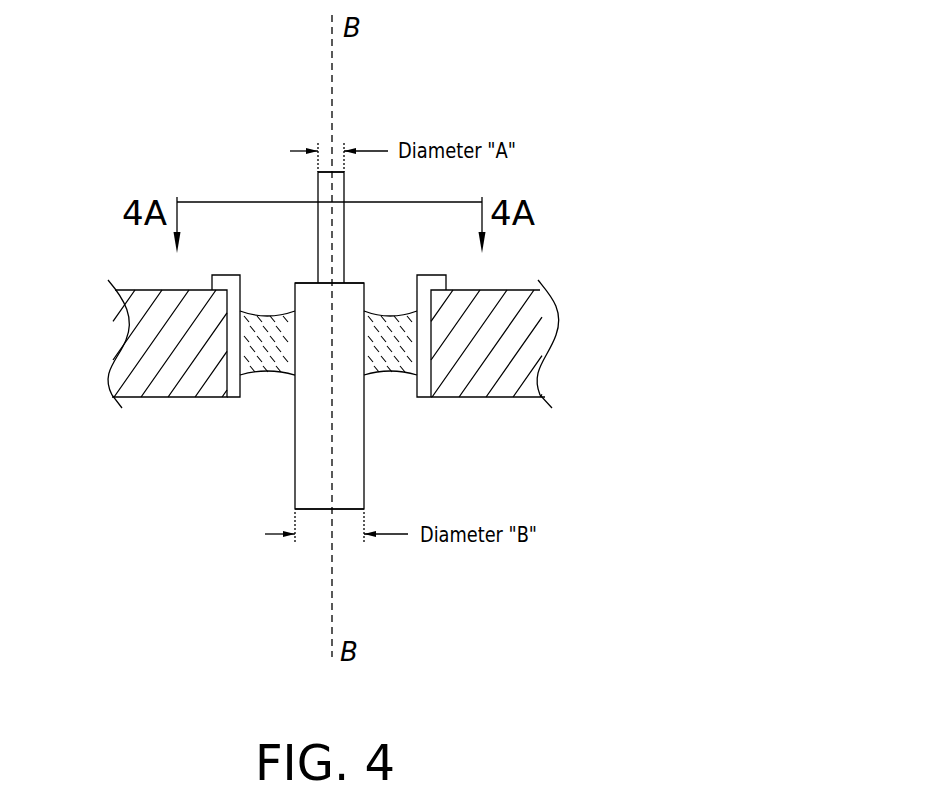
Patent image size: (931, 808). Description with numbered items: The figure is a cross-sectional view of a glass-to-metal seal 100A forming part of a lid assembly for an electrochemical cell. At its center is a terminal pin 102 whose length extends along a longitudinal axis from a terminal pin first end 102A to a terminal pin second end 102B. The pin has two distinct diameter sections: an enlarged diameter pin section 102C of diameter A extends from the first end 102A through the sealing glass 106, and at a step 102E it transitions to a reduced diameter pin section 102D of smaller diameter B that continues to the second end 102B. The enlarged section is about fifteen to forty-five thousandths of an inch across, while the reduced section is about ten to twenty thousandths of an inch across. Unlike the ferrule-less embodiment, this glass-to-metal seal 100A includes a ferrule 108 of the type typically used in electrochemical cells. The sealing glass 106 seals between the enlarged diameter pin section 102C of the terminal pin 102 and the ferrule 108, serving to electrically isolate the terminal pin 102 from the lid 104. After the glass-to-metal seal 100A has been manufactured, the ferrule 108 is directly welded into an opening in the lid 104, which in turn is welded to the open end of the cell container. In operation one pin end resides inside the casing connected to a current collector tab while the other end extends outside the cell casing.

The glass-to-metal seal 100A is at (560, 86).
The terminal pin 102 is at (372, 273).
The terminal pin first end 102A is at (332, 509).
The terminal pin second end 102B is at (333, 152).
The enlarged diameter pin section 102C is at (352, 449).
The reduced diameter pin section 102D is at (332, 190).
The step 102E is at (308, 278).
The lid 104 is at (163, 296).
The sealing glass 106 is at (390, 376).
The ferrule 108 is at (433, 278).